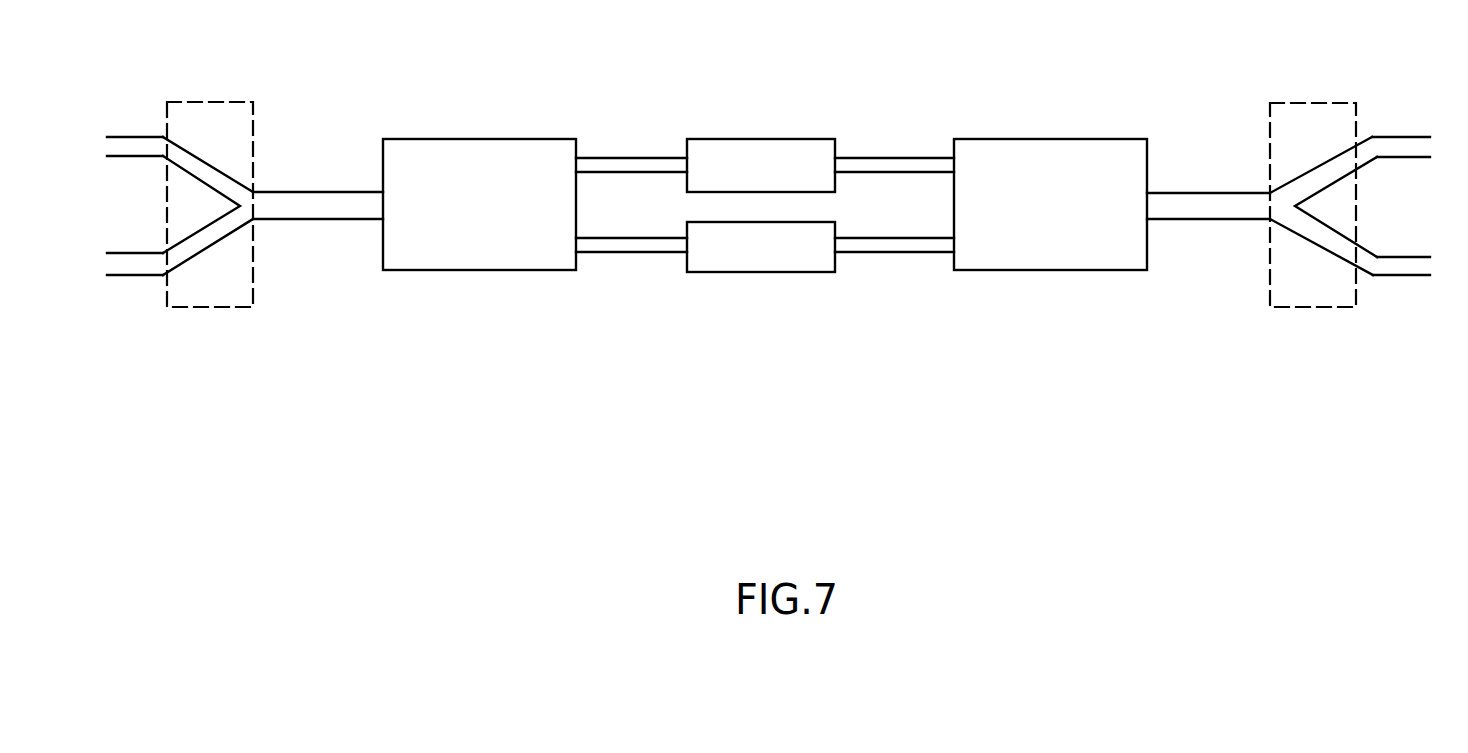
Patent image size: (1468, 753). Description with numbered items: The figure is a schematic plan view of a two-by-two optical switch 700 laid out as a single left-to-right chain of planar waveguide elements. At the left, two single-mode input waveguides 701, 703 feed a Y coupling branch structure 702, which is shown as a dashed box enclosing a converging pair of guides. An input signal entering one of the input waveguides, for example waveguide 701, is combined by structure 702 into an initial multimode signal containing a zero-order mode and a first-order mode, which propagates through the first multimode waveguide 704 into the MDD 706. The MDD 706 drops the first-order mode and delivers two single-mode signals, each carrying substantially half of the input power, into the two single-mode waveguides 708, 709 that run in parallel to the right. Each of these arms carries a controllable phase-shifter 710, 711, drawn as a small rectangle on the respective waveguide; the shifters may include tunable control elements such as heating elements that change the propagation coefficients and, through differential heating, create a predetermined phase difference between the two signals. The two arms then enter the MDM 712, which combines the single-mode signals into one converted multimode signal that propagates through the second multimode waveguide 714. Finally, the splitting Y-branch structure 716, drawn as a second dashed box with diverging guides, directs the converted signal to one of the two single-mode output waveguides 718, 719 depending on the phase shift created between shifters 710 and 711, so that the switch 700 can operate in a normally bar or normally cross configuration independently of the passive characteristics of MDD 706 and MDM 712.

The optical switch 700 is at (421, 417).
The SM input waveguide 701 is at (123, 135).
The Y coupling branch structure 702 is at (197, 310).
The SM input waveguide 703 is at (138, 277).
The first MM waveguide 704 is at (320, 221).
The MDD 706 is at (477, 272).
The SM MD waveguide 708 is at (628, 253).
The SM MD waveguide 709 is at (622, 157).
The controllable phase-shifter 710 is at (767, 272).
The controllable phase-shifter 711 is at (737, 138).
The MDM 712 is at (1087, 272).
The second MM waveguide 714 is at (1203, 221).
The splitting Y-branch structure 716 is at (1322, 309).
The SM output waveguide 718 is at (1395, 277).
The SM output waveguide 719 is at (1397, 135).